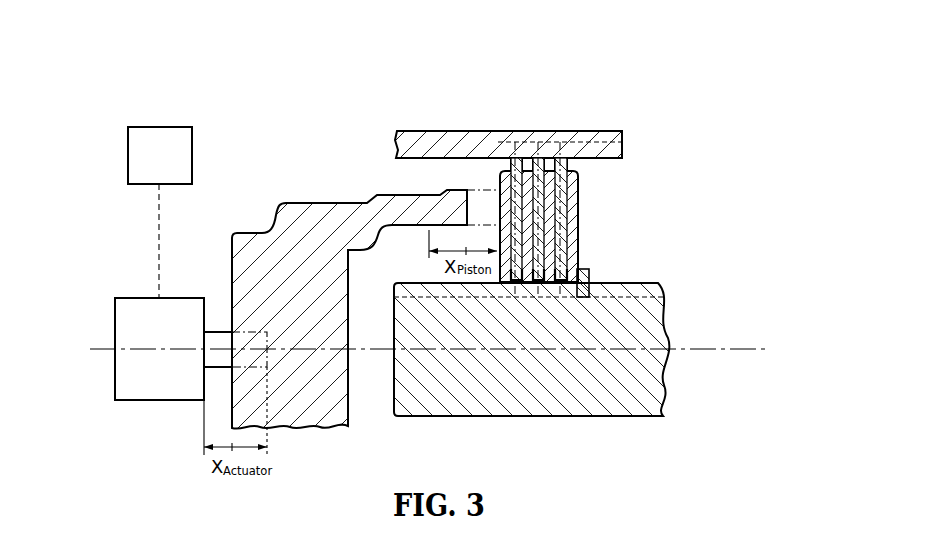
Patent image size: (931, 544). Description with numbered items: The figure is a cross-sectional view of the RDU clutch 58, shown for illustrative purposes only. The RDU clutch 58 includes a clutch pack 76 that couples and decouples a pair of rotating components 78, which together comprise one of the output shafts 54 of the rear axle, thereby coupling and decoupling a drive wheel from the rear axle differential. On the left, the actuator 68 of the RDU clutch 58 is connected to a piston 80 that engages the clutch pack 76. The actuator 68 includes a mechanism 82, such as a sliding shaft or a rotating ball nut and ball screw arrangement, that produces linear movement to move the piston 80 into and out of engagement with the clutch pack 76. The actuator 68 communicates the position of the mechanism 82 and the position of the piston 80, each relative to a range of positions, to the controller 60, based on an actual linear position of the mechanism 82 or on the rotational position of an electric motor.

The output shaft 54 is at (632, 147).
The RDU clutch 58 is at (696, 83).
The controller 60 is at (127, 155).
The actuator 68 is at (142, 298).
The clutch pack 76 is at (604, 224).
The rotating components 78 is at (585, 131).
The piston 80 is at (327, 202).
The mechanism 82 is at (218, 332).